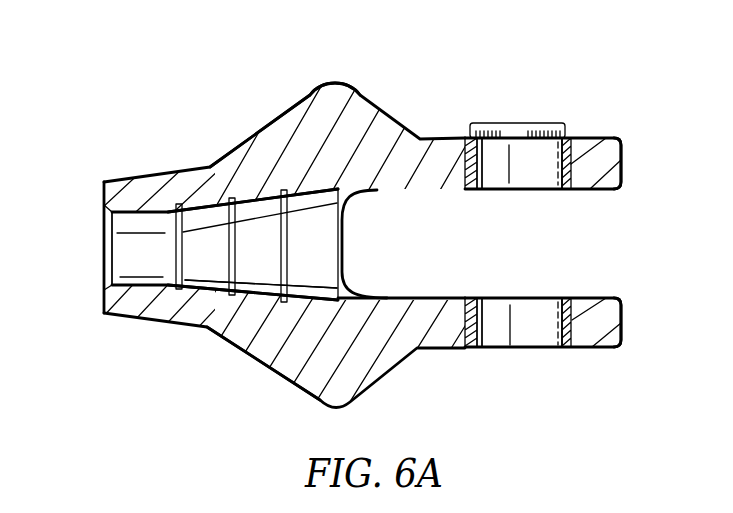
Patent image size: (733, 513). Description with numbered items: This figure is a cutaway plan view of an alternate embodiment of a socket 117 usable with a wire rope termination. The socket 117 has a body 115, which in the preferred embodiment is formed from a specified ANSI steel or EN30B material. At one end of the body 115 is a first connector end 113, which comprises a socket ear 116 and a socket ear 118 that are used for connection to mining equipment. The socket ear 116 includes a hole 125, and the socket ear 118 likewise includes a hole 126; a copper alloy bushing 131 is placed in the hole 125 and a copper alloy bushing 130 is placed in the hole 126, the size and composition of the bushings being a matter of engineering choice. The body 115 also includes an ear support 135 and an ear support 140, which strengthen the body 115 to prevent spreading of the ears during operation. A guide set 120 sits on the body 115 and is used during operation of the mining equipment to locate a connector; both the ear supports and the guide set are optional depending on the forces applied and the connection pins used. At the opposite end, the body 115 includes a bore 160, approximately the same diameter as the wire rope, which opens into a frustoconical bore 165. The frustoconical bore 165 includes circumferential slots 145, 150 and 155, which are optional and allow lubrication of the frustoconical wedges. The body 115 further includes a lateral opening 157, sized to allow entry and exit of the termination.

The first connector end 113 is at (652, 272).
The body 115 is at (372, 104).
The socket ear 116 is at (622, 157).
The socket 117 is at (466, 70).
The socket ear 118 is at (623, 310).
The guide set 120 is at (518, 123).
The hole 125 is at (525, 177).
The hole 126 is at (528, 335).
The copper alloy bushing 130 is at (575, 313).
The copper alloy bushing 131 is at (569, 142).
The ear support 135 is at (290, 115).
The ear support 140 is at (362, 383).
The circumferential slot 145 is at (188, 230).
The circumferential slot 150 is at (227, 267).
The circumferential slot 155 is at (305, 236).
The lateral opening 157 is at (430, 298).
The bore 160 is at (119, 249).
The frustoconical bore 165 is at (260, 275).